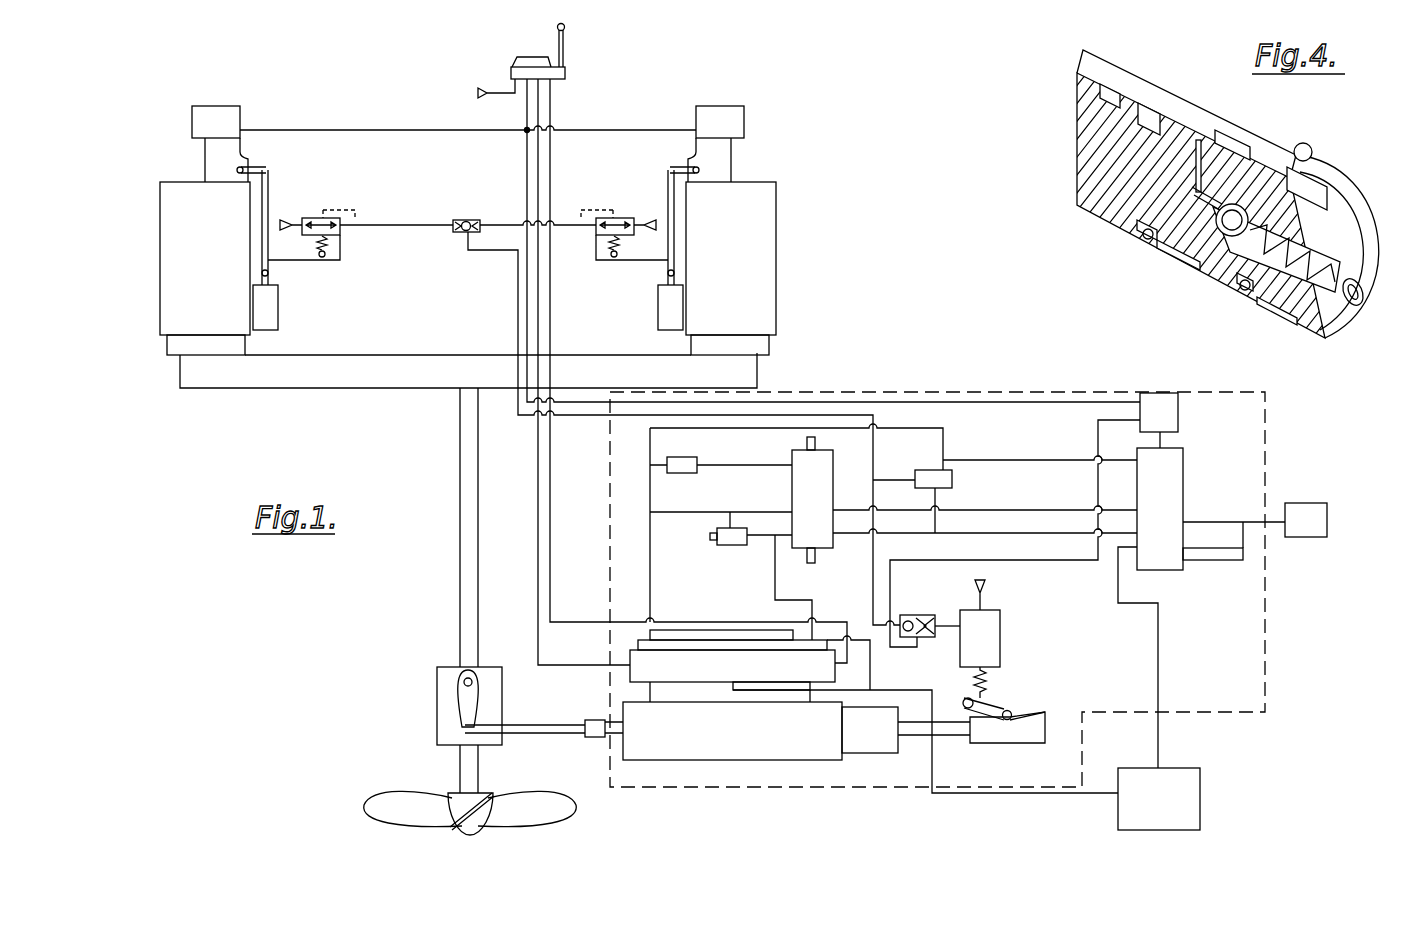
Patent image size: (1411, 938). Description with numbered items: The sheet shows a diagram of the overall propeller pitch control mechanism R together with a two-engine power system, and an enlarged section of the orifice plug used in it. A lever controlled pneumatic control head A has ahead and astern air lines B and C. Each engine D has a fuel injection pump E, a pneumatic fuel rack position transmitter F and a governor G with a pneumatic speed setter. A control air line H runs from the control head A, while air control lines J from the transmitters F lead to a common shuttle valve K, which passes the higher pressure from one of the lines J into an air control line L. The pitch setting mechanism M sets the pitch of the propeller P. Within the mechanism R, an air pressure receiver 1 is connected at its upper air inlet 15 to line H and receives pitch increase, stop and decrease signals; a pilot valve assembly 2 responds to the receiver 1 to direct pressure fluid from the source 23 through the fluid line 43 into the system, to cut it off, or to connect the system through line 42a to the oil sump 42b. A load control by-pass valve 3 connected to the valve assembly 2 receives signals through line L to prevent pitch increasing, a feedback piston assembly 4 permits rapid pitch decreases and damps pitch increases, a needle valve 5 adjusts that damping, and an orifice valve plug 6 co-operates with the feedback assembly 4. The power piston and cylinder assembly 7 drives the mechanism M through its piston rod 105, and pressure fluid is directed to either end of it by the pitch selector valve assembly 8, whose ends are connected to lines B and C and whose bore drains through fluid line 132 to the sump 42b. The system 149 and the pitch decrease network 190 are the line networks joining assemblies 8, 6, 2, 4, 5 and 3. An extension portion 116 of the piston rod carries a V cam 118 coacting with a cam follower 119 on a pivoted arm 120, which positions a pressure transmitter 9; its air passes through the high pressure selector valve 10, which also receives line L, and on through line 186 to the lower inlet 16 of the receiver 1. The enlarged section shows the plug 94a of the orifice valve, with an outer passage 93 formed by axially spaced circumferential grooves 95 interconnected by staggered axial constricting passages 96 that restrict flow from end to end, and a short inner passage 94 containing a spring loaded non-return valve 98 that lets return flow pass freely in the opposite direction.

In FIG. 1, the pneumatic control head A is at (562, 72).
In FIG. 1, the ahead air line B is at (553, 92).
In FIG. 1, the astern air line C is at (541, 111).
In FIG. 1, the engine D is at (158, 257).
In FIG. 1, the fuel injection pump E is at (278, 316).
In FIG. 1, the pneumatic fuel rack position transmitter F is at (341, 235).
In FIG. 1, the governor G is at (213, 110).
In FIG. 1, the control air line H is at (527, 172).
In FIG. 1, the air control line J is at (404, 225).
In FIG. 1, the shuttle valve K is at (468, 220).
In FIG. 1, the air control line L is at (518, 300).
In FIG. 1, the pitch setting mechanism M is at (437, 698).
In FIG. 1, the propeller P is at (406, 802).
In FIG. 1, the propeller pitch control mechanism R is at (1008, 385).
In FIG. 1, the air pressure receiver 1 is at (1183, 417).
In FIG. 1, the pilot valve assembly 2 is at (1186, 495).
In FIG. 1, the load control by-pass valve 3 is at (926, 465).
In FIG. 1, the feedback piston assembly 4 is at (782, 496).
In FIG. 1, the needle valve 5 is at (732, 552).
In FIG. 1, the orifice valve plug 6 is at (690, 451).
In FIG. 1, the power piston and cylinder assembly 7 is at (720, 757).
In FIG. 1, the pitch selector valve assembly 8 is at (622, 680).
In FIG. 1, the pressure transmitter 9 is at (1003, 650).
In FIG. 1, the high pressure selector valve 10 is at (922, 608).
In FIG. 1, the air inlet 15 is at (1150, 393).
In FIG. 1, the air inlet 16 is at (1138, 420).
In FIG. 1, the source of hydraulic fluid 23 is at (1308, 503).
In FIG. 1, the line 42a is at (1158, 676).
In FIG. 1, the oil sump 42b is at (1200, 784).
In FIG. 1, the fluid line 43 is at (1254, 522).
In FIG. 1, the piston rod 105 is at (608, 736).
In FIG. 1, the extension portion 116 is at (912, 745).
In FIG. 1, the V cam 118 is at (1022, 738).
In FIG. 1, the cam follower 119 is at (1016, 712).
In FIG. 1, the arm 120 is at (988, 700).
In FIG. 1, the fluid line 132 is at (892, 682).
In FIG. 1, the system 149 is at (650, 548).
In FIG. 1, the line 186 is at (1010, 561).
In FIG. 1, the pitch decrease network 190 is at (984, 533).
In FIG. 4, the outer passage 93 is at (1158, 80).
In FIG. 4, the inner passage 94 is at (1282, 318).
In FIG. 4, the plug 94a is at (1092, 156).
In FIG. 4, the circumferential groove 95 is at (1300, 142).
In FIG. 4, the axial constricting passage 96 is at (1240, 130).
In FIG. 4, the spring loaded non-return valve 98 is at (1214, 290).